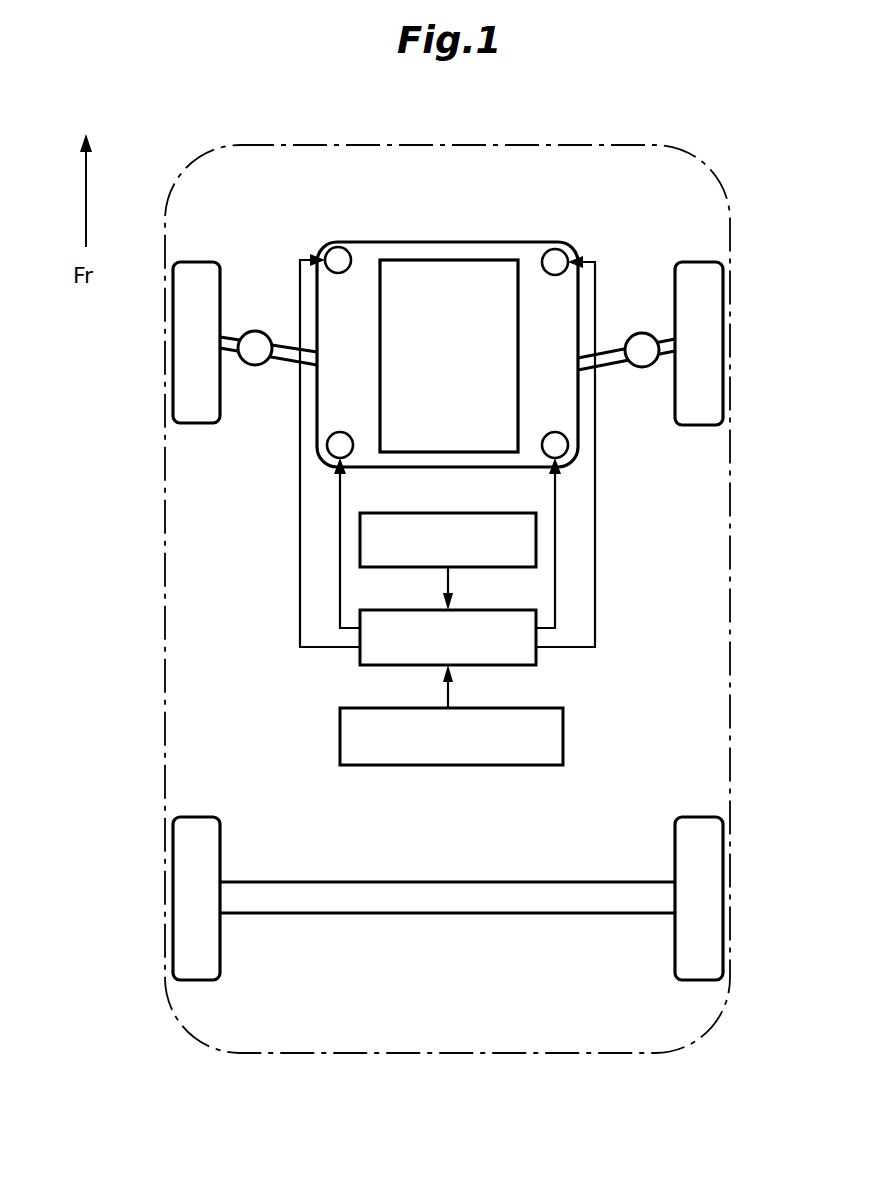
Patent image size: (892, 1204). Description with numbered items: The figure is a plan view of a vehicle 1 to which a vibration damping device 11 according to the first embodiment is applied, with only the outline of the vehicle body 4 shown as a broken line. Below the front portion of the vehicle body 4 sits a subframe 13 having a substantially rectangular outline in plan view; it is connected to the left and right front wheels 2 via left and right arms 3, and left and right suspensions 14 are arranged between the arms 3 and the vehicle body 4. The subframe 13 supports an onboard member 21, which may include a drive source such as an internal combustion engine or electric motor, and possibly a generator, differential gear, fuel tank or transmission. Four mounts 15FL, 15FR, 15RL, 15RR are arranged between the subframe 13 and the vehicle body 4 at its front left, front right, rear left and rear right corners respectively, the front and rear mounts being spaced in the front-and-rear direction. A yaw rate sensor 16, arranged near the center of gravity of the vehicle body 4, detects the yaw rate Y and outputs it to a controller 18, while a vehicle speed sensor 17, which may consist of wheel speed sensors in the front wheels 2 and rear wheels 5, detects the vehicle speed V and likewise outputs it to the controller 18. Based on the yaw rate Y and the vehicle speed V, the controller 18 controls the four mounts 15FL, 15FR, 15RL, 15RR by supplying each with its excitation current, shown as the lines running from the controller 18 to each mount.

The vehicle 1 is at (718, 140).
The front wheels 2 is at (199, 262).
The arms 3 is at (280, 368).
The vehicle body 4 is at (497, 145).
The rear wheels 5 is at (200, 817).
The vibration damping device 11 is at (423, 657).
The subframe 13 is at (474, 242).
The suspensions 14 is at (255, 331).
The front left mount 15FL is at (338, 247).
The front right mount 15FR is at (562, 250).
The rear left mount 15RL is at (344, 432).
The rear right mount 15RR is at (553, 432).
The yaw rate sensor 16 is at (360, 708).
The vehicle speed sensor 17 is at (394, 513).
The controller 18 is at (377, 610).
The onboard member 21 is at (428, 260).